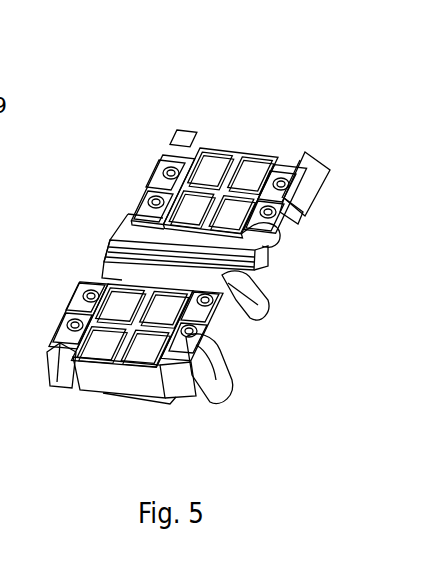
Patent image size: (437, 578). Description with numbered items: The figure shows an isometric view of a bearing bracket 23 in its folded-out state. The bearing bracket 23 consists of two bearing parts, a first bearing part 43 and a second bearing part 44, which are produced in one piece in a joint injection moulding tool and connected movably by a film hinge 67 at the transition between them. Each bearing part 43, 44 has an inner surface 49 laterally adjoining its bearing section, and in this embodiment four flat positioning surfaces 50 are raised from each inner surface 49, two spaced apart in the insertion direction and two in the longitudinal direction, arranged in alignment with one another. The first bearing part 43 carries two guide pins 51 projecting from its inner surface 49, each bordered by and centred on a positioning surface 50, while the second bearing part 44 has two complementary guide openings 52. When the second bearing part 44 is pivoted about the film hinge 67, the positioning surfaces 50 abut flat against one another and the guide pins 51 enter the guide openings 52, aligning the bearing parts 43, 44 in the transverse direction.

The bearing bracket 23 is at (144, 102).
The first bearing part 43 is at (130, 412).
The second bearing part 44 is at (210, 136).
The inner surface 49 is at (242, 150).
The positioning surface 50 is at (167, 150).
The guide pin 51 is at (262, 306).
The guide opening 52 is at (166, 170).
The film hinge 67 is at (113, 245).